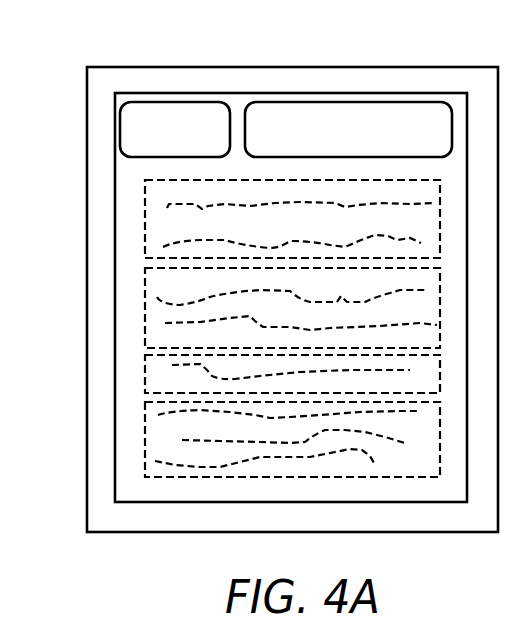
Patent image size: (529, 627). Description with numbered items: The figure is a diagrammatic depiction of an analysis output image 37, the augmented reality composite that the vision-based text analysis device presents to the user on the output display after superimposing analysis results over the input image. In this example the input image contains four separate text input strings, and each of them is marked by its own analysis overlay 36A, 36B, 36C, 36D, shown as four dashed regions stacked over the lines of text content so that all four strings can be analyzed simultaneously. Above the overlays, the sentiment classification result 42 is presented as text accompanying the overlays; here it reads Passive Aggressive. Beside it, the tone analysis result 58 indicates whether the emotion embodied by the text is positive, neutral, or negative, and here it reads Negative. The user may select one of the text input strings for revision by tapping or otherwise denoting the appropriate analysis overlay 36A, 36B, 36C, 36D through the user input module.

The analysis output image 37 is at (408, 67).
The tone analysis result 58 is at (180, 102).
The sentiment classification result 42 is at (343, 102).
The analysis overlay 36A is at (145, 222).
The analysis overlay 36B is at (145, 305).
The analysis overlay 36C is at (145, 378).
The analysis overlay 36D is at (145, 445).